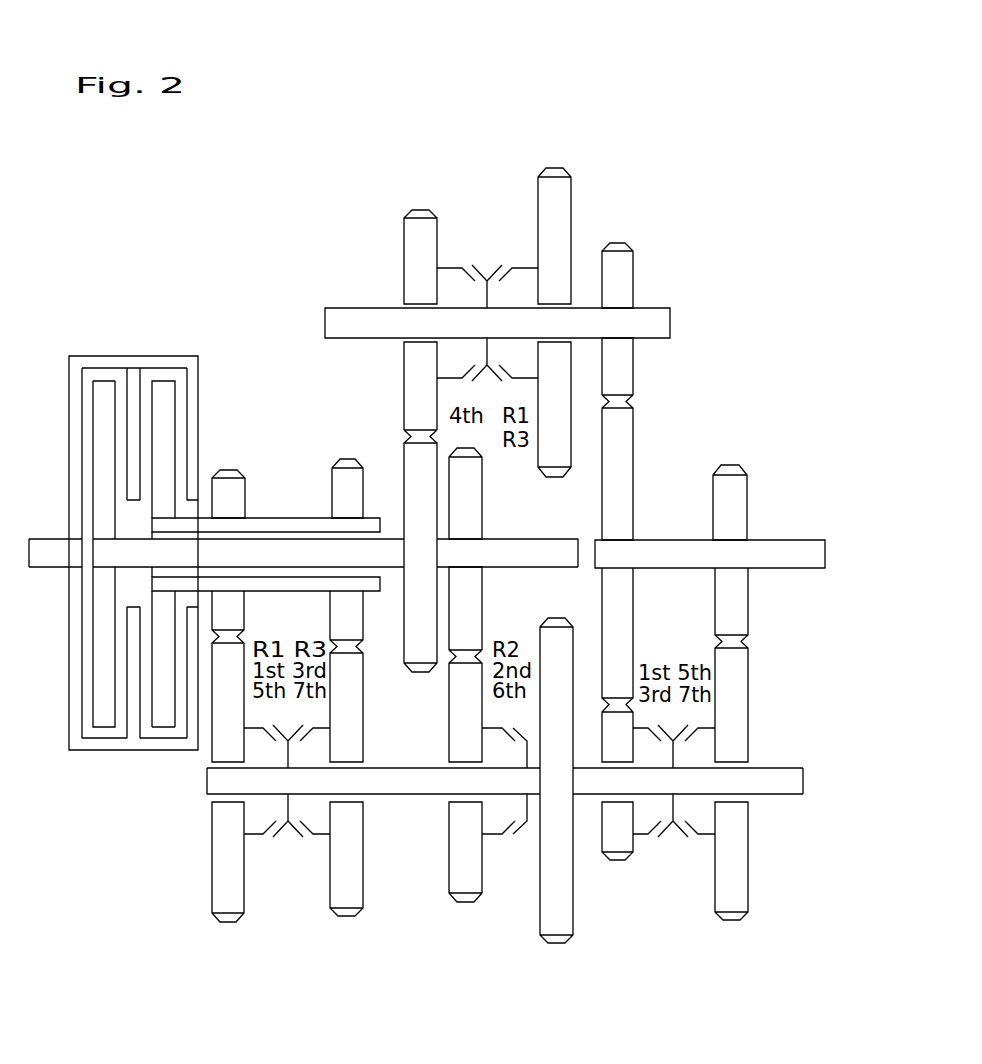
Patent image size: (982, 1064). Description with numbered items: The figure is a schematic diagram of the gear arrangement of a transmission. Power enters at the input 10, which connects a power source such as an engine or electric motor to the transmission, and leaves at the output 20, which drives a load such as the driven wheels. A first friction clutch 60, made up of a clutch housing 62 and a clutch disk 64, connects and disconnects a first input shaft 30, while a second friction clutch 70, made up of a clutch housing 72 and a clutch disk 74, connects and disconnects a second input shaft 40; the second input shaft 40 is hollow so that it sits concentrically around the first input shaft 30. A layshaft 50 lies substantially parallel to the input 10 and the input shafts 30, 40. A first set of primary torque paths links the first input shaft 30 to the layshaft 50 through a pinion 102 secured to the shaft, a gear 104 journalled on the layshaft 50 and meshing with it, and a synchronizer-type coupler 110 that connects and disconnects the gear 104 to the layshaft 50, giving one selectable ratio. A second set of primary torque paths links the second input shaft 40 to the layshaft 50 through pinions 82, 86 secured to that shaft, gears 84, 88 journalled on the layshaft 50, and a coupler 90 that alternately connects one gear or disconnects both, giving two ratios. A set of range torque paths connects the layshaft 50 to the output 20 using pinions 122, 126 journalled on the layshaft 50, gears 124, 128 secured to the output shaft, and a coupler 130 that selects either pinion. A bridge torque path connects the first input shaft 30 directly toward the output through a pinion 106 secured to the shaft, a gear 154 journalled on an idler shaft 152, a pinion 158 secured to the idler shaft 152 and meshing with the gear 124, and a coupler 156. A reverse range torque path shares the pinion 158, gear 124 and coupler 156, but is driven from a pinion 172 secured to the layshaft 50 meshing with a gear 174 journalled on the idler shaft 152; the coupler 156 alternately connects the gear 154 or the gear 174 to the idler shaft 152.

The input 10 is at (48, 552).
The output 20 is at (815, 553).
The first input shaft 30 is at (518, 556).
The second input shaft 40 is at (285, 522).
The layshaft 50 is at (788, 780).
The first friction clutch 60 is at (95, 355).
The clutch housing 62 is at (75, 697).
The clutch disk 64 is at (102, 708).
The second friction clutch 70 is at (172, 355).
The clutch housing 72 is at (188, 430).
The clutch disk 74 is at (165, 408).
The pinion 82 is at (232, 487).
The gear 84 is at (222, 862).
The pinion 86 is at (347, 481).
The gear 88 is at (345, 875).
The coupler 90 is at (282, 848).
The pinion 102 is at (484, 606).
The gear 104 is at (460, 877).
The pinion 106 is at (410, 452).
The coupler 110 is at (505, 850).
The pinion 122 is at (612, 840).
The gear 124 is at (620, 462).
The pinion 126 is at (733, 875).
The gear 128 is at (732, 498).
The coupler 130 is at (670, 846).
The idler shaft 152 is at (335, 322).
The gear 154 is at (417, 231).
The coupler 156 is at (492, 258).
The pinion 158 is at (625, 267).
The pinion 172 is at (550, 922).
The gear 174 is at (560, 202).